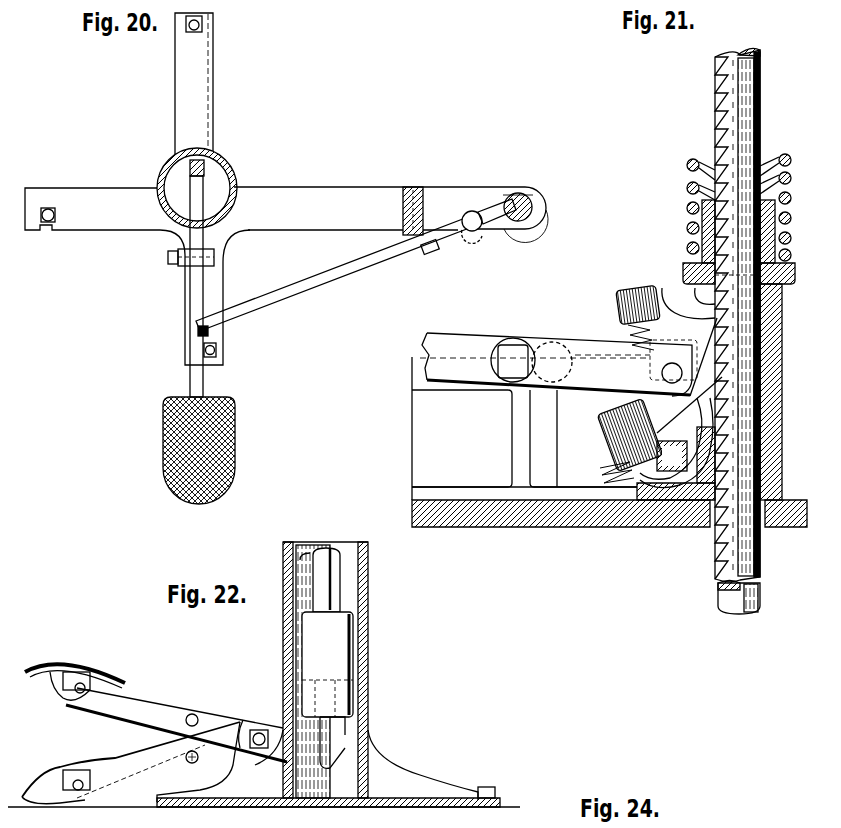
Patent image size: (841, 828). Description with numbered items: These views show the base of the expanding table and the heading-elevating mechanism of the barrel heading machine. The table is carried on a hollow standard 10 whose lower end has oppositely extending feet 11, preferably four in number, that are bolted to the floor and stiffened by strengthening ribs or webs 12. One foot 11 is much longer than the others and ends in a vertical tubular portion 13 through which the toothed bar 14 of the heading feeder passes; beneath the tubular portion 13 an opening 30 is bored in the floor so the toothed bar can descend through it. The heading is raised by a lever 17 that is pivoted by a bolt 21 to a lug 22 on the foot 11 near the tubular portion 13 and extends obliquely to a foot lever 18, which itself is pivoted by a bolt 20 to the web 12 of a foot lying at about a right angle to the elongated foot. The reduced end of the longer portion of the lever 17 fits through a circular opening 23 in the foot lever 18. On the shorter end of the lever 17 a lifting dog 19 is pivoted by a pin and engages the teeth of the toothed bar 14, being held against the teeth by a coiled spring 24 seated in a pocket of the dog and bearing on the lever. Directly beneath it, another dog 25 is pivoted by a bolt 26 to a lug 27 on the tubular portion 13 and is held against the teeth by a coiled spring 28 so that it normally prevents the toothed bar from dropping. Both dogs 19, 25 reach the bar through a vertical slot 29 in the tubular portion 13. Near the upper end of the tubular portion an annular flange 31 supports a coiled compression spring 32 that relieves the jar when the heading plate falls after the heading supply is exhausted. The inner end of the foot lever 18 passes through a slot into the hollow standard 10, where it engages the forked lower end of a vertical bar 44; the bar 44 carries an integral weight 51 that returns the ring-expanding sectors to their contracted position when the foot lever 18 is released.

In FIG. 20, the hollow standard 10 is at (233, 171).
In FIG. 22, the hollow standard 10 is at (368, 637).
In FIG. 20, the feet 11 is at (203, 208).
In FIG. 21, the feet 11 is at (479, 492).
In FIG. 22, the feet 11 is at (437, 802).
In FIG. 20, the strengthening ribs or webs 12 is at (213, 92).
In FIG. 21, the strengthening ribs or webs 12 is at (524, 428).
In FIG. 22, the strengthening ribs or webs 12 is at (135, 763).
In FIG. 20, the vertical tubular portion 13 is at (539, 196).
In FIG. 21, the vertical tubular portion 13 is at (782, 418).
In FIG. 20, the toothed bar 14 is at (516, 195).
In FIG. 21, the toothed bar 14 is at (740, 106).
In FIG. 20, the lever 17 is at (332, 284).
In FIG. 21, the lever 17 is at (558, 364).
In FIG. 20, the foot lever 18 is at (190, 379).
In FIG. 22, the foot lever 18 is at (156, 713).
In FIG. 20, the lifting dog 19 is at (503, 227).
In FIG. 21, the lifting dog 19 is at (662, 366).
In FIG. 20, the bolt 20 is at (168, 263).
In FIG. 22, the bolt 20 is at (250, 734).
In FIG. 20, the bolt 21 is at (433, 256).
In FIG. 21, the bolt 21 is at (514, 352).
In FIG. 20, the lug 22 is at (413, 236).
In FIG. 21, the lug 22 is at (551, 344).
In FIG. 20, the circular opening 23 is at (208, 334).
In FIG. 22, the circular opening 23 is at (207, 696).
In FIG. 21, the coiled spring 24 is at (612, 344).
In FIG. 21, the dog 25 is at (688, 405).
In FIG. 20, the bolt 26 is at (488, 238).
In FIG. 21, the bolt 26 is at (672, 456).
In FIG. 20, the lug 27 is at (475, 210).
In FIG. 21, the lug 27 is at (692, 482).
In FIG. 21, the coiled spring 28 is at (612, 474).
In FIG. 20, the vertical slot 29 is at (528, 226).
In FIG. 21, the vertical slot 29 is at (700, 298).
In FIG. 21, the opening 30 is at (766, 526).
In FIG. 21, the annular flange 31 is at (791, 284).
In FIG. 21, the coiled compression spring 32 is at (687, 207).
In FIG. 22, the vertical bar 44 is at (328, 594).
In FIG. 22, the weight 51 is at (327, 690).